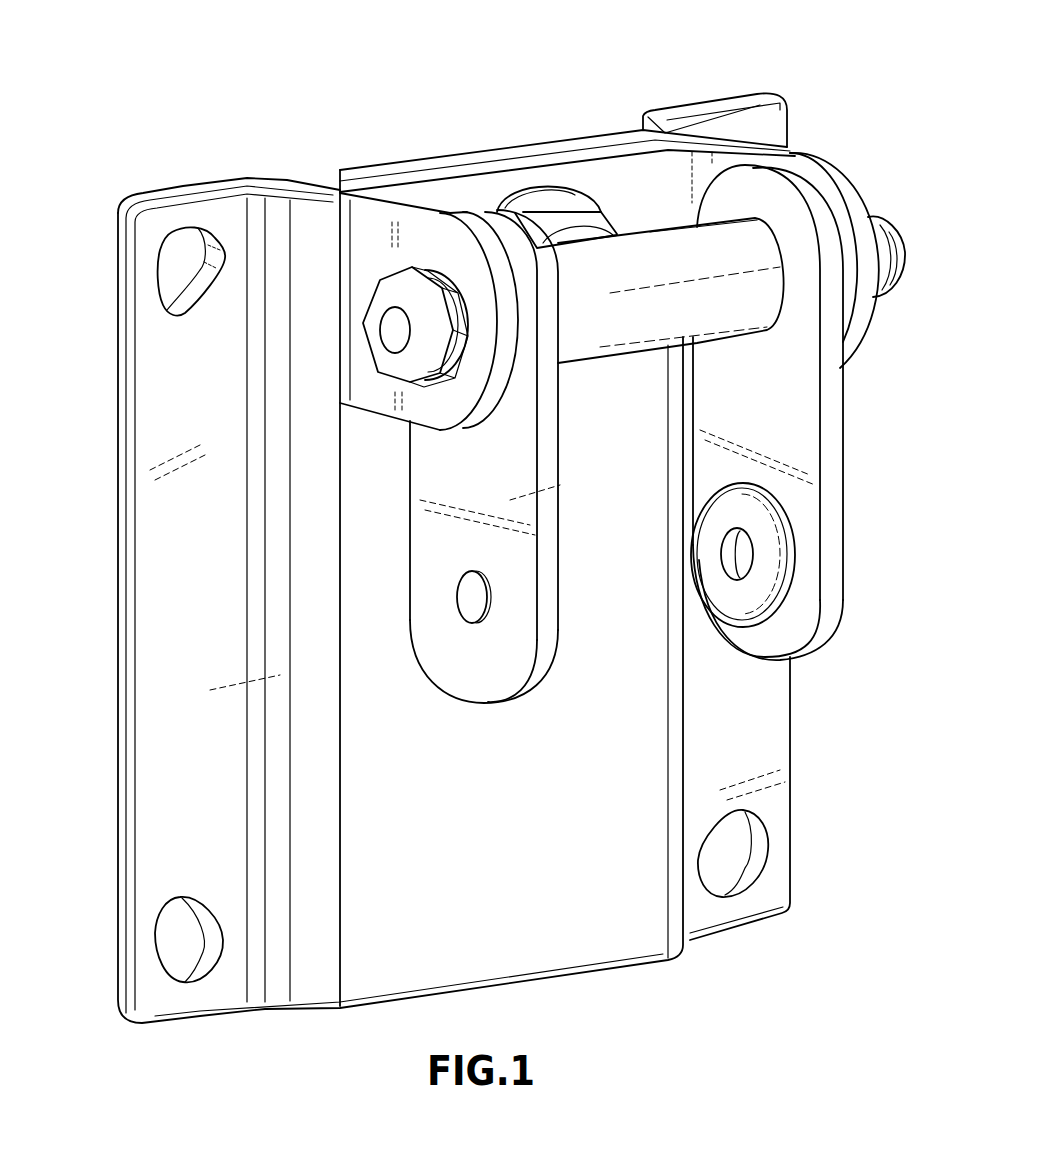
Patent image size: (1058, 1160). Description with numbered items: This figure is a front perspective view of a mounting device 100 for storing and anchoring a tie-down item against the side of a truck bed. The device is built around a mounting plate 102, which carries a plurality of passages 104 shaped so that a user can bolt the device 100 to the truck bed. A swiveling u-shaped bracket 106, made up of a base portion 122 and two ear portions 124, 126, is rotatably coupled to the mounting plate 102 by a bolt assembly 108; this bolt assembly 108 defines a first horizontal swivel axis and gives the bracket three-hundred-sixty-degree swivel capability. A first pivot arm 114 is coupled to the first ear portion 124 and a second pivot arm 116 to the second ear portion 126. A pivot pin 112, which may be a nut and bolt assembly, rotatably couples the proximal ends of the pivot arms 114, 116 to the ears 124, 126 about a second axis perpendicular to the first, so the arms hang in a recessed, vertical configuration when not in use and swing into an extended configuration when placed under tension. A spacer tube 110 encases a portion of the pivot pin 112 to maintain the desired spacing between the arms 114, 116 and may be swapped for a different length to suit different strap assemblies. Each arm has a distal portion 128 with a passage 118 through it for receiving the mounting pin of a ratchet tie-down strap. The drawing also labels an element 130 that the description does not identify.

The mounting device 100 is at (228, 78).
The mounting plate 102 is at (153, 622).
The passages 104 is at (156, 266).
The u-shaped bracket 106 is at (651, 178).
The bolt assembly 108 is at (540, 247).
The spacer tube 110 is at (679, 325).
The pivot pin 112 is at (388, 333).
The first pivot arm 114 is at (462, 550).
The second pivot arm 116 is at (807, 418).
The passages 118 is at (455, 607).
The base portion 122 is at (438, 205).
The first ear portion 124 is at (365, 233).
The second ear portion 126 is at (793, 152).
The distal portion 128 is at (480, 703).
The boss with hole 130 is at (763, 580).